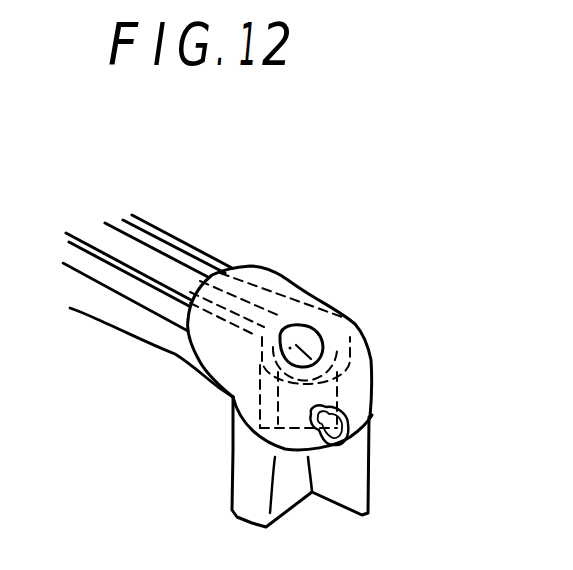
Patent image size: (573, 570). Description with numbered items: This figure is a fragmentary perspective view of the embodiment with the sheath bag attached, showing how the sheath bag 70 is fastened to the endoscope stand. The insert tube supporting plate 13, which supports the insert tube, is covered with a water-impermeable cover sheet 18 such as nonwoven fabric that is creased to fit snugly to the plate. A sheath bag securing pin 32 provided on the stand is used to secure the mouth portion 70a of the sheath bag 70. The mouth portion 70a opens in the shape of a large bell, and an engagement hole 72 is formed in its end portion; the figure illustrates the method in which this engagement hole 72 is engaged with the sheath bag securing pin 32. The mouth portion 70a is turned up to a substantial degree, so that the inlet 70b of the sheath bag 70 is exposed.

The insert tube supporting plate 13 is at (192, 257).
The cover sheet 18 is at (113, 325).
The sheath bag securing pin 32 is at (330, 423).
The sheath bag 70 is at (133, 257).
The mouth portion 70a is at (358, 372).
The inlet 70b is at (304, 344).
The engagement hole 72 is at (330, 423).